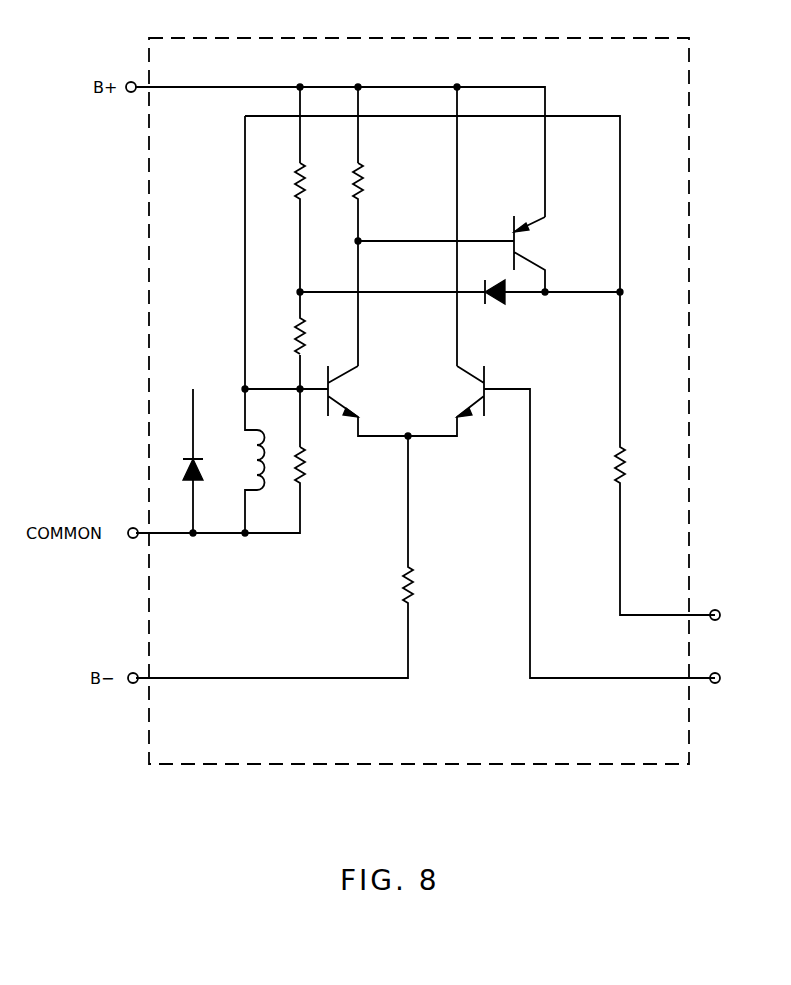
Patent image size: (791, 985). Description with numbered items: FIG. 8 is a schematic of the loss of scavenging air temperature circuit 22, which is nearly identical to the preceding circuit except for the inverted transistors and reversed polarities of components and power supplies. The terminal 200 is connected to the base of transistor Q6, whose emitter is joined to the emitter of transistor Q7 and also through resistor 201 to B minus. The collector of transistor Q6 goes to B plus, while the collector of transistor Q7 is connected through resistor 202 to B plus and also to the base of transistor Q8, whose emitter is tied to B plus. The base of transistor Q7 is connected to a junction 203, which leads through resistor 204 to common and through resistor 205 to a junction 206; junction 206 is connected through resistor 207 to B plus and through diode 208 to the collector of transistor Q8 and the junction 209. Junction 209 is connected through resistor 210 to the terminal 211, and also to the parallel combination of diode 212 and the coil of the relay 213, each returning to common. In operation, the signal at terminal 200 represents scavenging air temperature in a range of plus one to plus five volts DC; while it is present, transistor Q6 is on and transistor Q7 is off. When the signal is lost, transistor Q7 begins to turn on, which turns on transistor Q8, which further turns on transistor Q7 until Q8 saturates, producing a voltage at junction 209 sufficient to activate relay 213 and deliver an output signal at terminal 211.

The loss of scavenging air temperature circuit 22 is at (483, 40).
The terminal 200 is at (737, 680).
The resistor 201 is at (414, 585).
The resistor 202 is at (366, 185).
The junction 203 is at (297, 384).
The resistor 204 is at (306, 465).
The resistor 205 is at (294, 335).
The junction 206 is at (300, 292).
The resistor 207 is at (310, 182).
The diode 208 is at (508, 303).
The junction 209 is at (623, 296).
The resistor 210 is at (612, 462).
The terminal 211 is at (737, 616).
The diode 212 is at (205, 470).
The relay 213 is at (250, 455).
The transistor Q6 is at (474, 390).
The transistor Q7 is at (341, 390).
The transistor Q8 is at (530, 246).